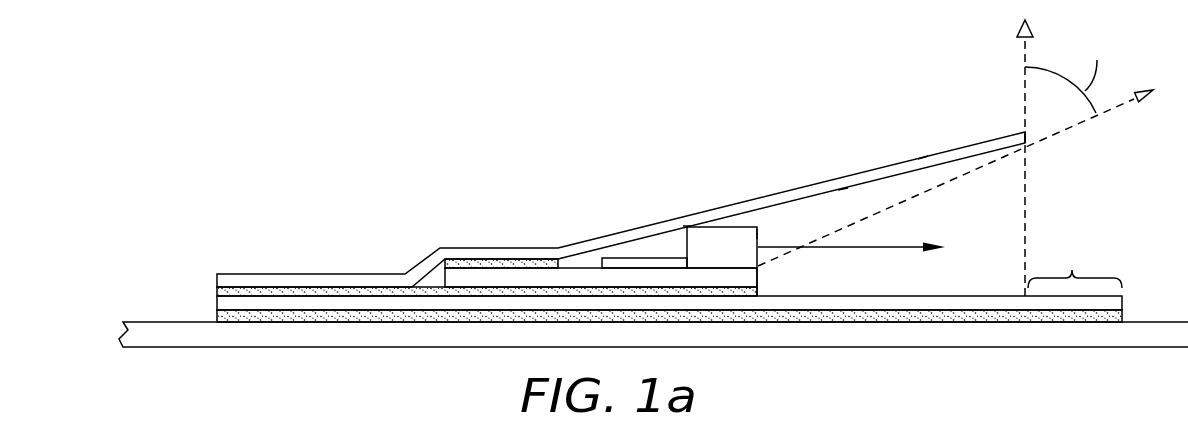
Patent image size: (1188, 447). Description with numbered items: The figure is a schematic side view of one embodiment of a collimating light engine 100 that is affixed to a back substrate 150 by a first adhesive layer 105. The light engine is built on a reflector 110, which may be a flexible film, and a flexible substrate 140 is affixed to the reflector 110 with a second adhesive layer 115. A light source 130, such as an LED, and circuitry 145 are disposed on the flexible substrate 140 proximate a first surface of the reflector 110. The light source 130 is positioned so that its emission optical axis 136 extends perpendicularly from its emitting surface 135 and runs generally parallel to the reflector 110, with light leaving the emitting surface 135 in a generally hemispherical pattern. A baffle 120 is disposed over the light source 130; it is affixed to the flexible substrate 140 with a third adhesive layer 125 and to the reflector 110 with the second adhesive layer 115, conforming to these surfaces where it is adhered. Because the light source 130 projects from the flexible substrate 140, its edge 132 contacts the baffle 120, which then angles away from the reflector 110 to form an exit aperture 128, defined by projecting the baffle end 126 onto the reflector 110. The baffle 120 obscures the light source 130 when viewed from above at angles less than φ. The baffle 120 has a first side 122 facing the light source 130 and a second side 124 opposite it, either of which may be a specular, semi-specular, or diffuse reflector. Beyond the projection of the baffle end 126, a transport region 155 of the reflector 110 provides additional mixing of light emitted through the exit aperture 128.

The collimating light engine 100 is at (190, 193).
The first adhesive layer 105 is at (215, 317).
The reflector 110 is at (215, 303).
The second adhesive layer 115 is at (260, 288).
The baffle 120 is at (313, 277).
The first side 122 is at (843, 190).
The second side 124 is at (923, 157).
The baffle end 126 is at (1025, 137).
The exit aperture 128 is at (1027, 182).
The light source 130 is at (732, 233).
The edge 132 is at (687, 225).
The emitting surface 135 is at (760, 234).
The emission optical axis 136 is at (883, 248).
The flexible substrate 140 is at (578, 277).
The circuitry 145 is at (632, 263).
The back substrate 150 is at (162, 340).
The transport region 155 is at (1075, 267).
The third adhesive layer 125 is at (495, 258).